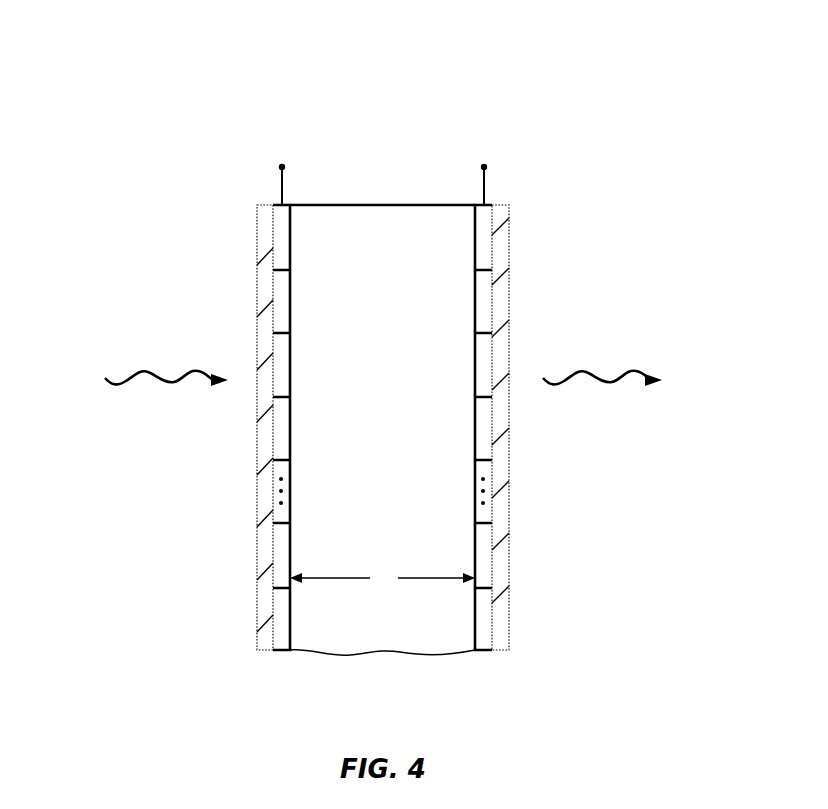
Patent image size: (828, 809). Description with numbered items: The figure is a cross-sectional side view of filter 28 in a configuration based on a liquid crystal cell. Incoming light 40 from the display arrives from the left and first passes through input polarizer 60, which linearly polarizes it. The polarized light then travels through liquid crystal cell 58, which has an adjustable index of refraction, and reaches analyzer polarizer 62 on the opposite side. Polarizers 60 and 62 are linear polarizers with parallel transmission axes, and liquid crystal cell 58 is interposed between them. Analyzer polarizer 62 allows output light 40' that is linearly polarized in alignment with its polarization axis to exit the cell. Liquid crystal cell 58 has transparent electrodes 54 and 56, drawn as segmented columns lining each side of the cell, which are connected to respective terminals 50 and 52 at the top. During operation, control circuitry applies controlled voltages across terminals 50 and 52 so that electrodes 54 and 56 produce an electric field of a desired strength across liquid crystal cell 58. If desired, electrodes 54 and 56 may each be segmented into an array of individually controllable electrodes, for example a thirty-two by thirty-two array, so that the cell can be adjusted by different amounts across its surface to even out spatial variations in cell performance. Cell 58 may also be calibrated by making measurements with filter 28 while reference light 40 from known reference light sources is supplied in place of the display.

The filter 28 is at (468, 74).
The incoming light 40 is at (166, 355).
The output light 40' is at (602, 355).
The terminal 50 is at (286, 165).
The terminal 52 is at (488, 165).
The transparent electrode 54 is at (282, 652).
The transparent electrode 56 is at (483, 652).
The liquid crystal cell 58 is at (372, 655).
The input polarizer 60 is at (265, 652).
The analyzer polarizer 62 is at (500, 652).